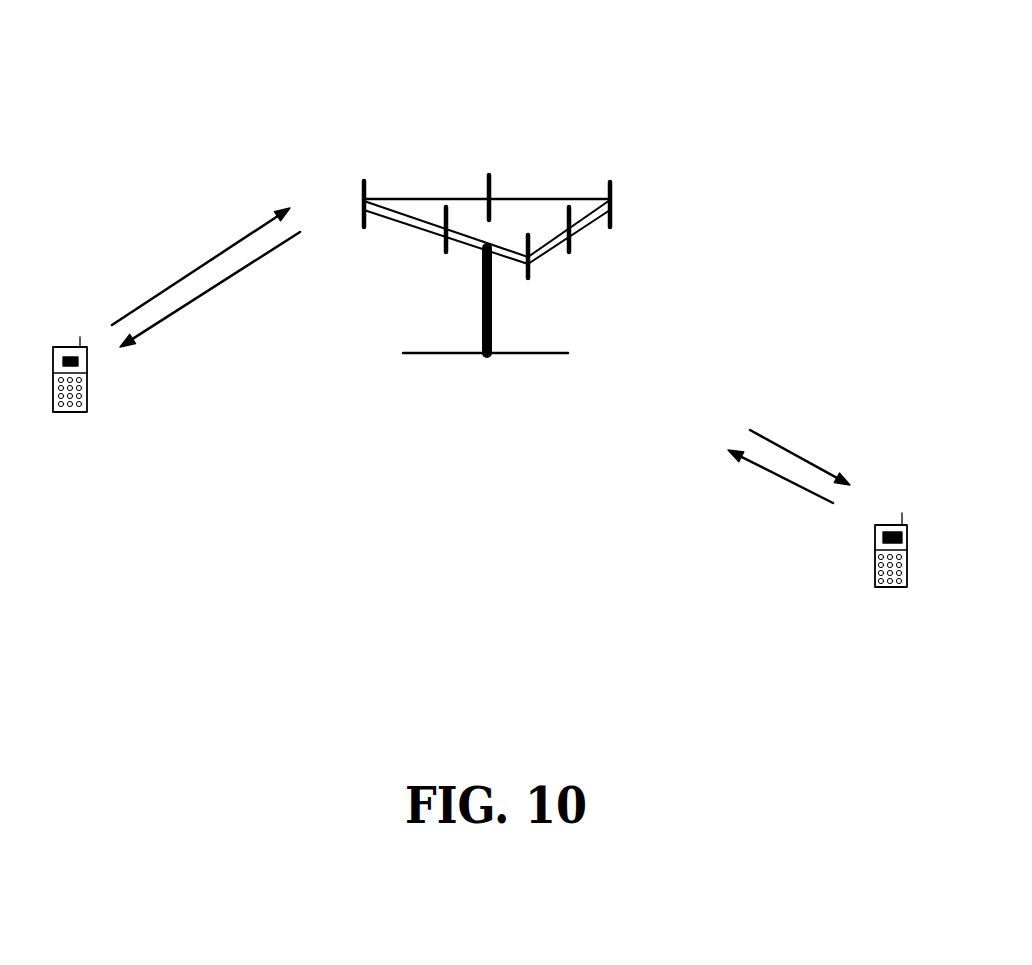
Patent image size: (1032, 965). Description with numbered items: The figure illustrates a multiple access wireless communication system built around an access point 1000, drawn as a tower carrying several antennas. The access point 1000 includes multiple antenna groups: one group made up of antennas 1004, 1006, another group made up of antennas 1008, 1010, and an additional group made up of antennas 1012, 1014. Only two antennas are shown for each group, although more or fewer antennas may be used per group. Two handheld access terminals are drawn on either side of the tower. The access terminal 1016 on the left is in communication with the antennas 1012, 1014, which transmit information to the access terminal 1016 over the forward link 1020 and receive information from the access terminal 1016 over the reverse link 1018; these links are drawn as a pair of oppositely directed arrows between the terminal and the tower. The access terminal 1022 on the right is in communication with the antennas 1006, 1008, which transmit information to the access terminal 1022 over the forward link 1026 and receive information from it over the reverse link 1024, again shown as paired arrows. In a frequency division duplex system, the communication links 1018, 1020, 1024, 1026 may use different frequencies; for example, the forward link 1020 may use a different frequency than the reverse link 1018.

The access point 1000 is at (457, 355).
The antenna 1004 is at (530, 275).
The antenna 1006 is at (572, 252).
The antenna 1008 is at (613, 222).
The antenna 1010 is at (489, 175).
The antenna 1012 is at (367, 193).
The antenna 1014 is at (446, 253).
The access terminal 1016 is at (70, 347).
The reverse link 1018 is at (200, 268).
The forward link 1020 is at (220, 287).
The access terminal 1022 is at (892, 525).
The reverse link 1024 is at (768, 472).
The forward link 1026 is at (807, 458).